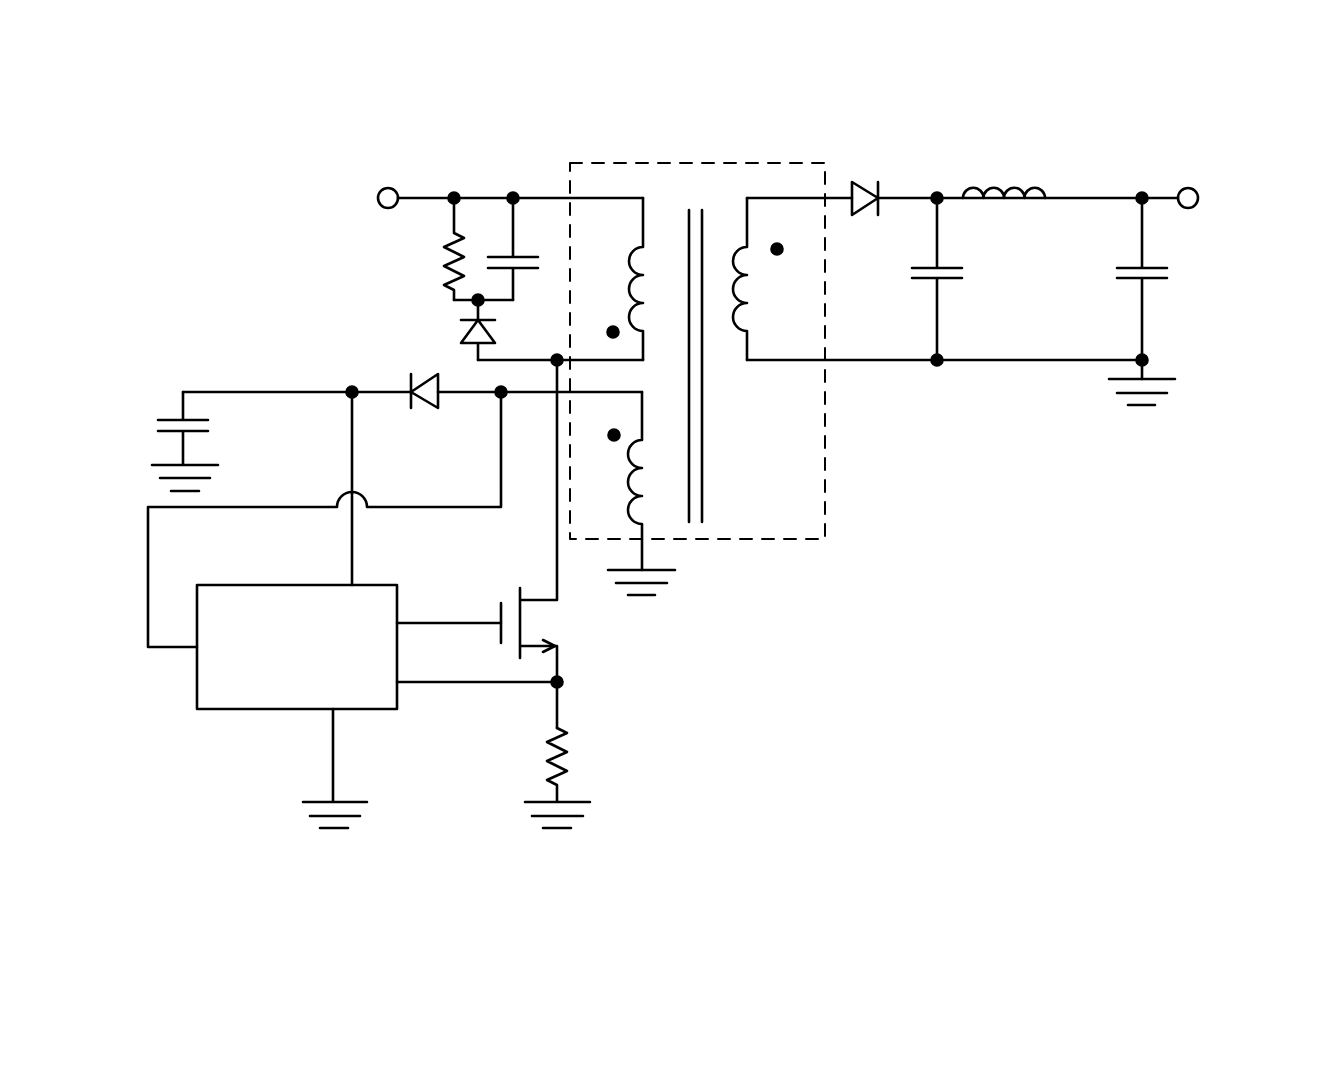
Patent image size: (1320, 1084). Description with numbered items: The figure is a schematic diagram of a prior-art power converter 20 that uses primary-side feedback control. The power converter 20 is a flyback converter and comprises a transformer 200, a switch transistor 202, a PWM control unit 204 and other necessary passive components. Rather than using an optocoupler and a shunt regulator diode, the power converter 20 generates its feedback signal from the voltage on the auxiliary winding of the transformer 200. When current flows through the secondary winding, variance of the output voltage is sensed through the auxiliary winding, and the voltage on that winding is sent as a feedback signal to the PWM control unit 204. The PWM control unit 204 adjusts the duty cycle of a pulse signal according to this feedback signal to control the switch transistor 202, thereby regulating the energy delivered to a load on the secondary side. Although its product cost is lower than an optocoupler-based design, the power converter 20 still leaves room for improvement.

The power converter 20 is at (1095, 144).
The transformer 200 is at (606, 162).
The switch transistor 202 is at (544, 589).
The PWM control unit 204 is at (227, 585).